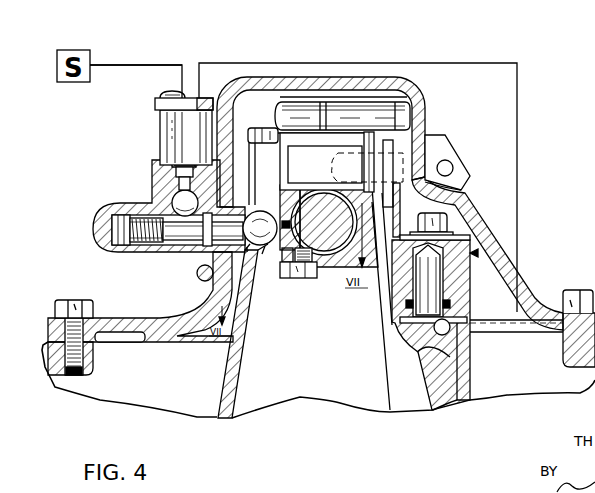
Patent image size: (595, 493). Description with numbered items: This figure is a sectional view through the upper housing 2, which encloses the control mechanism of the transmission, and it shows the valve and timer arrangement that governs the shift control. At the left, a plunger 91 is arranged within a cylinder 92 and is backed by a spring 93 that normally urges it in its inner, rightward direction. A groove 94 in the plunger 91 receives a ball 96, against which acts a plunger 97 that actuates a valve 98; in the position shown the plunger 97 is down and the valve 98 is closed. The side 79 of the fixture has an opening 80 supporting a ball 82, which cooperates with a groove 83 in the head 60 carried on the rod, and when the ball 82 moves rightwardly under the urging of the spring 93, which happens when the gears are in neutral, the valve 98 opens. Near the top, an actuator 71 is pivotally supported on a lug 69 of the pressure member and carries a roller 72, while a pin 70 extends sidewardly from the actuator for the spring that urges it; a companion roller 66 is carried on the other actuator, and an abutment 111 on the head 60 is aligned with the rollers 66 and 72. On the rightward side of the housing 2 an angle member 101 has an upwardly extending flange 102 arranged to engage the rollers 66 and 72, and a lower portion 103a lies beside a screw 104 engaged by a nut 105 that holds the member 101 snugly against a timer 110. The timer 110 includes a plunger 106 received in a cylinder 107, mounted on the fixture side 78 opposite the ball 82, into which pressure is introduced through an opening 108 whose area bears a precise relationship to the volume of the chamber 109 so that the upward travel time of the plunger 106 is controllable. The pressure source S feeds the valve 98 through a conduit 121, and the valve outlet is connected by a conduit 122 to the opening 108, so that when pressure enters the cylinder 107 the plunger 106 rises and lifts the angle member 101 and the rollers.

The upper housing 2 is at (339, 141).
The head 60 is at (323, 262).
The roller 66 is at (400, 152).
The lug 69 is at (267, 150).
The pin 70 is at (257, 128).
The actuator 71 is at (330, 101).
The roller 72 is at (398, 112).
The side 78 is at (462, 377).
The side 79 is at (248, 325).
The opening 80 is at (263, 250).
The ball 82 is at (263, 216).
The groove 83 is at (288, 195).
The plunger 91 is at (213, 252).
The cylinder 92 is at (115, 247).
The spring 93 is at (118, 207).
The groove 94 is at (192, 232).
The ball 96 is at (180, 199).
The plunger 97 is at (177, 175).
The valve 98 is at (173, 140).
The angle member 101 is at (369, 192).
The flange 102 is at (433, 185).
The lower portion 103a is at (457, 238).
The screw 104 is at (440, 208).
The nut 105 is at (447, 227).
The plunger 106 is at (453, 283).
The cylinder 107 is at (462, 305).
The opening 108 is at (440, 352).
The chamber 109 is at (440, 326).
The timer 110 is at (478, 253).
The abutment 111 is at (320, 156).
The conduit 121 is at (125, 64).
The conduit 122 is at (518, 97).